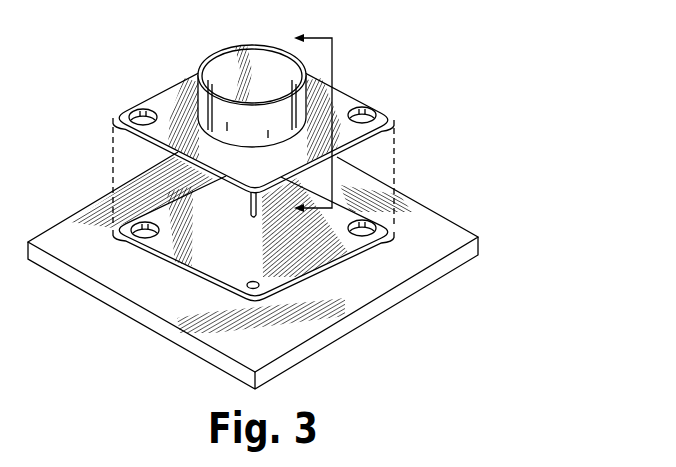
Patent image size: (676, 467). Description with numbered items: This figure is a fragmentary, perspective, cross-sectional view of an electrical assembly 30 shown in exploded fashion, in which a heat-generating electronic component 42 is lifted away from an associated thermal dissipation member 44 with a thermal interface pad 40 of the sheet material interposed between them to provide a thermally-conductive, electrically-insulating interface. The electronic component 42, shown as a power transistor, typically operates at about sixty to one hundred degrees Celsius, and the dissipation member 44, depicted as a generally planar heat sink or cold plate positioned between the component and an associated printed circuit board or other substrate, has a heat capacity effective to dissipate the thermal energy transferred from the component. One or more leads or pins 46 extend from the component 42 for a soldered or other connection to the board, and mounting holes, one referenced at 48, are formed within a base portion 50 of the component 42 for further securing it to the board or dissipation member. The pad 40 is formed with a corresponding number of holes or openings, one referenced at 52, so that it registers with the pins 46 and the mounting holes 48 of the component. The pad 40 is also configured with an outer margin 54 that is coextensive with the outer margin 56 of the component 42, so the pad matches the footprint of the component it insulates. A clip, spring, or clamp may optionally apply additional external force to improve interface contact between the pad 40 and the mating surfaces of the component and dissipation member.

The electrical assembly 30 is at (300, 199).
The thermal interface pad 40 is at (287, 261).
The electronic component 42 is at (231, 45).
The thermal dissipation member 44 is at (373, 178).
The leads or pins 46 is at (250, 203).
The mounting holes 48 is at (367, 110).
The base portion 50 is at (240, 117).
The holes or openings 52 is at (376, 231).
The outer margin 54 is at (165, 270).
The outer margin 56 is at (150, 150).